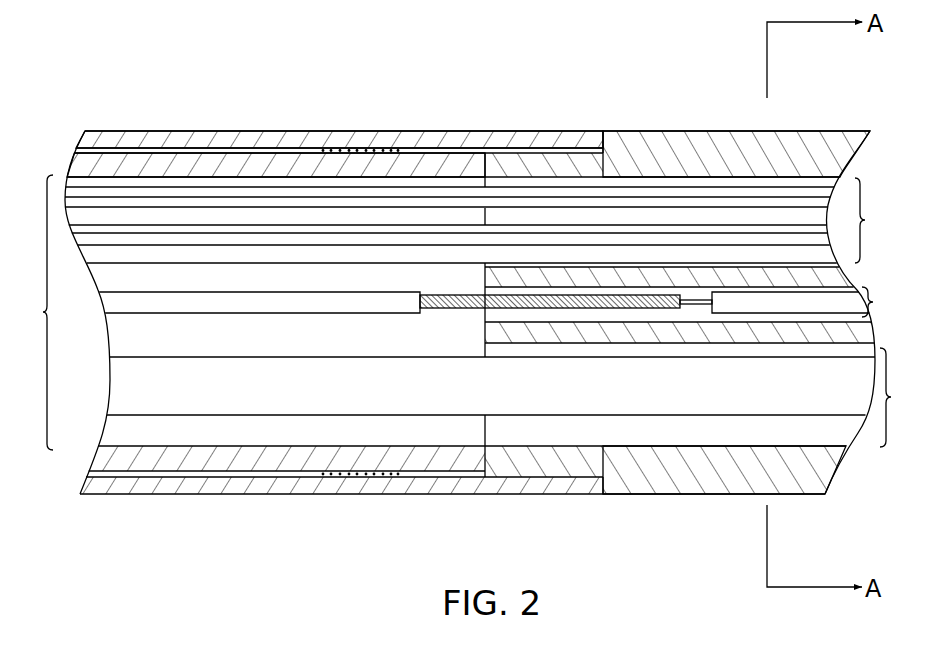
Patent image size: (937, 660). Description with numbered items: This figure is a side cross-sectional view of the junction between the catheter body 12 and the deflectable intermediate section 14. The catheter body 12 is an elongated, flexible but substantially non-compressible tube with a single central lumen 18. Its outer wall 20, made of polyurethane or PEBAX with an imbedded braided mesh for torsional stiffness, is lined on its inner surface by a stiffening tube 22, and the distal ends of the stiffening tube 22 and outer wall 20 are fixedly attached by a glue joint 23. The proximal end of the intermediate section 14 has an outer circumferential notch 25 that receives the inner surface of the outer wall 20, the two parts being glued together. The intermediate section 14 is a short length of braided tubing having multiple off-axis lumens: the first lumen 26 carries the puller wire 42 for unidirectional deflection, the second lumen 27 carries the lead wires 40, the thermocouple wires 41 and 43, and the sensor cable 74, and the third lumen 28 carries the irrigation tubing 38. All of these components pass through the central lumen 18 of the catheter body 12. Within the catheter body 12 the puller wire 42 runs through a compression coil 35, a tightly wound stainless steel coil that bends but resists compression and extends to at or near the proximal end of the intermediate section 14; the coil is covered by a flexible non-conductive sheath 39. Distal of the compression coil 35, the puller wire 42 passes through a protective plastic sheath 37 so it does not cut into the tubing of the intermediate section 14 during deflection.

The catheter body 12 is at (503, 107).
The intermediate section 14 is at (644, 112).
The central lumen 18 is at (61, 312).
The outer wall 20 is at (206, 138).
The stiffening tube 22 is at (240, 163).
The glue joint 23 is at (361, 150).
The outer circumferential notch 25 is at (563, 152).
The first lumen 26 is at (886, 300).
The second lumen 27 is at (879, 220).
The third lumen 28 is at (519, 397).
The compression coil 35 is at (450, 310).
The protective plastic sheath 37 is at (812, 314).
The irrigation tubing 38 is at (730, 388).
The non-conductive sheath 39 is at (185, 303).
The lead wires 40 is at (813, 210).
The thermocouple wire 41 is at (697, 230).
The puller wire 42 is at (687, 308).
The thermocouple wire 43 is at (730, 233).
The sensor cable 74 is at (410, 252).